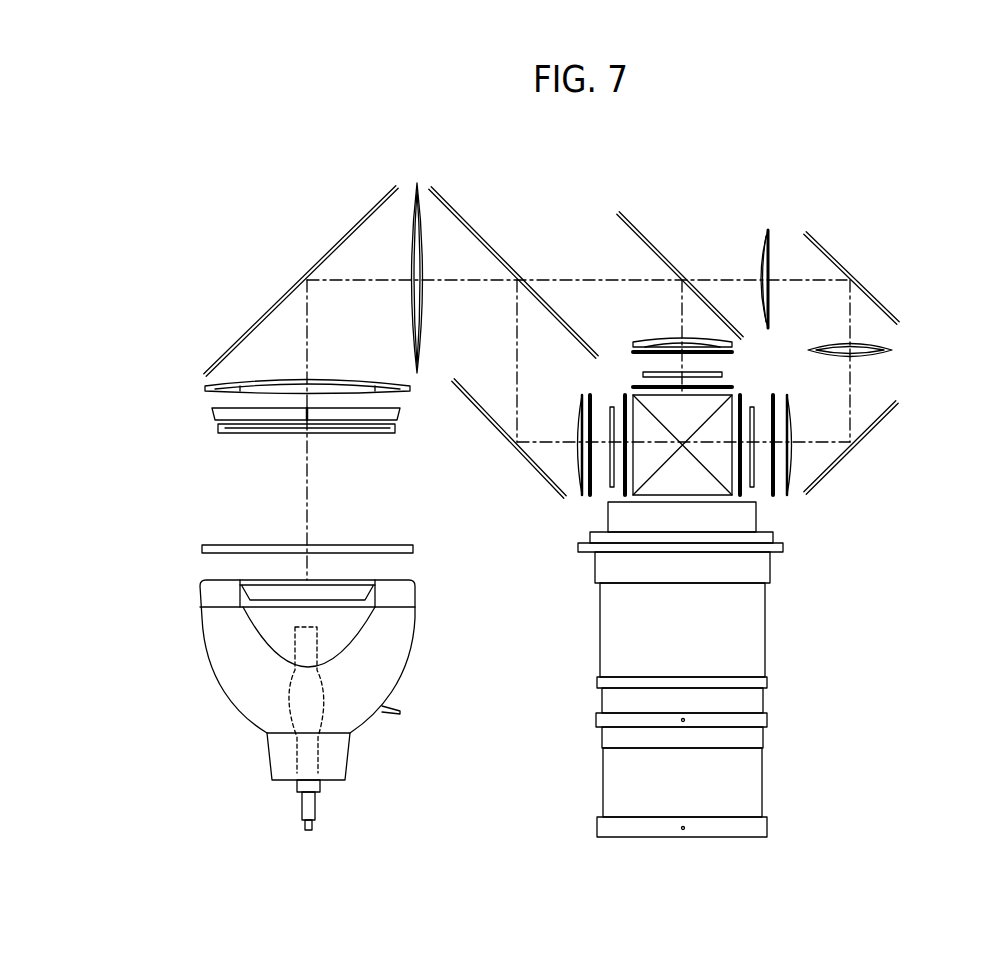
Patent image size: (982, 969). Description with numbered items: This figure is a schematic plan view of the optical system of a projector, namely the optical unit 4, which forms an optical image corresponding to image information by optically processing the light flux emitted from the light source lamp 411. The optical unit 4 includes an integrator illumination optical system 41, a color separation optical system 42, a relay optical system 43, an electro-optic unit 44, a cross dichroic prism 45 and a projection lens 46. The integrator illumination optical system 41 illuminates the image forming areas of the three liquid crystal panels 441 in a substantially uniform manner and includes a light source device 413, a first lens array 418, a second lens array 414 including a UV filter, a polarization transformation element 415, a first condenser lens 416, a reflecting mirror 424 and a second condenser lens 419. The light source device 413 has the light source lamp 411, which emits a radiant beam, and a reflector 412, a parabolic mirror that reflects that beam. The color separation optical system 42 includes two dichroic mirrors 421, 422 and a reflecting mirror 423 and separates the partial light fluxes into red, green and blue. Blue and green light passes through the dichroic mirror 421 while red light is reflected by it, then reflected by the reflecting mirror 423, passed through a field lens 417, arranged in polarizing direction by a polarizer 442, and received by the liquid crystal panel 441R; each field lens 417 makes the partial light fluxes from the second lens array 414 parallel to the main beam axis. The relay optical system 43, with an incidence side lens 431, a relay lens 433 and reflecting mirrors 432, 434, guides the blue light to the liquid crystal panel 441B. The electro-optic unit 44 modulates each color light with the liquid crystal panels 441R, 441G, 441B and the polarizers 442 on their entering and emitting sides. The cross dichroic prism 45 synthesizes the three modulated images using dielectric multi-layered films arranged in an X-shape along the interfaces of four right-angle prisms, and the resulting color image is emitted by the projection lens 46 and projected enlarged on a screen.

The optical unit 4 is at (930, 192).
The integrator illumination optical system 41 is at (178, 268).
The light source lamp 411 is at (290, 687).
The reflector 412 is at (233, 702).
The light source device 413 is at (125, 663).
The second lens array 414 is at (220, 428).
The polarization transformation element 415 is at (212, 410).
The first condenser lens 416 is at (203, 387).
The field lens 417 is at (647, 337).
The first lens array 418 is at (200, 549).
The second condenser lens 419 is at (418, 183).
The color separation optical system 42 is at (557, 193).
The dichroic mirror 421 is at (453, 208).
The dichroic mirror 422 is at (635, 227).
The reflecting mirror 423 is at (475, 397).
The reflecting mirror 424 is at (223, 350).
The relay optical system 43 is at (900, 288).
The incidence side lens 431 is at (767, 230).
The reflecting mirror 432 is at (823, 247).
The relay lens 433 is at (893, 350).
The reflecting mirror 434 is at (890, 410).
The electro-optic unit 44 is at (757, 491).
The liquid crystal panel 441 is at (688, 444).
The liquid crystal panel 441R is at (611, 480).
The liquid crystal panel 441G is at (707, 377).
The liquid crystal panel 441B is at (753, 477).
The polarizer 442 is at (633, 385).
The cross dichroic prism 45 is at (663, 480).
The projection lens 46 is at (720, 762).